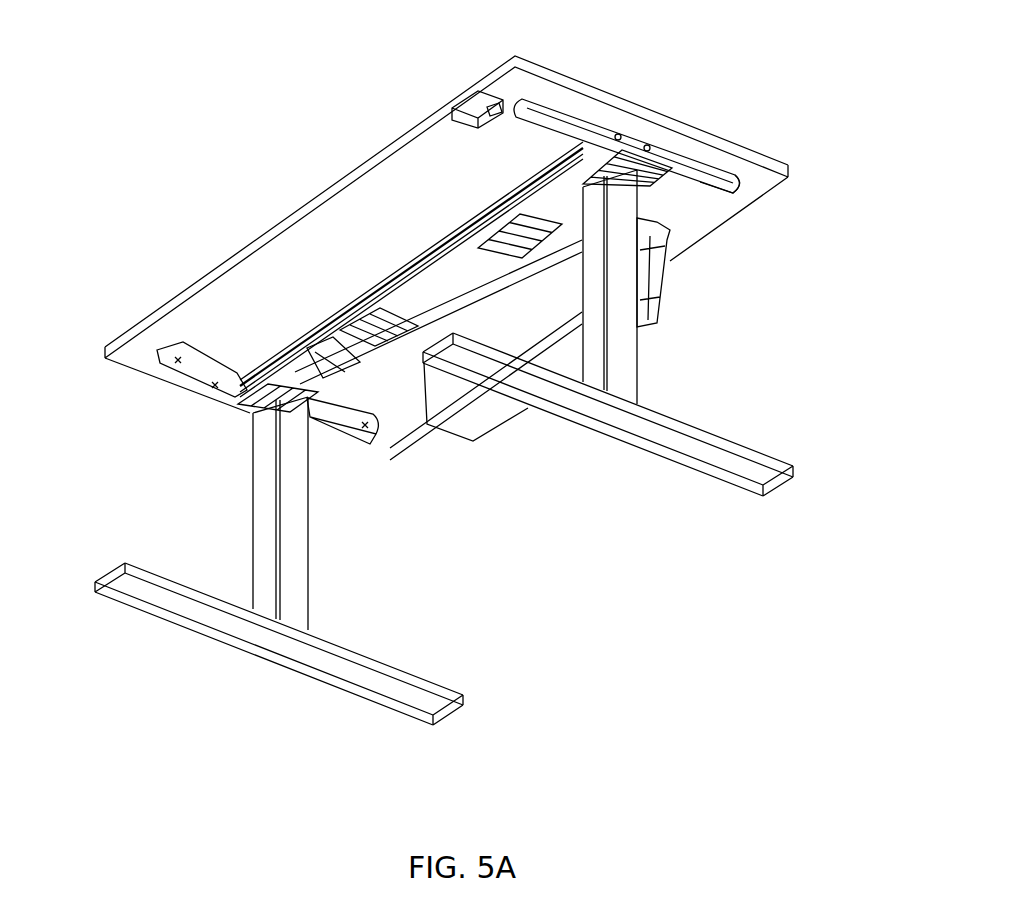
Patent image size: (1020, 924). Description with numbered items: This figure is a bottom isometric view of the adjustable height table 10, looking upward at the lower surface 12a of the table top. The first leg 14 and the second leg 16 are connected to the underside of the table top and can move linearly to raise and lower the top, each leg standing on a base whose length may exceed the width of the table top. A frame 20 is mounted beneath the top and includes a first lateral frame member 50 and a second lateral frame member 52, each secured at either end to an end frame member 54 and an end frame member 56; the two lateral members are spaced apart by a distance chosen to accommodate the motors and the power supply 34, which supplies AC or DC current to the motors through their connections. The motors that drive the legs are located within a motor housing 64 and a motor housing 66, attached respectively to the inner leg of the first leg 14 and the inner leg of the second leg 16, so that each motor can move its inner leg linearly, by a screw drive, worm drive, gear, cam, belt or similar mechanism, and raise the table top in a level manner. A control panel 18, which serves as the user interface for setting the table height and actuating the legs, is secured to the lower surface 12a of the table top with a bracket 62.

The table 10 is at (782, 128).
The lower surface 12a is at (323, 247).
The first leg 14 is at (645, 370).
The second leg 16 is at (243, 537).
The control panel 18 is at (457, 112).
The frame 20 is at (595, 115).
The power supply 34 is at (408, 262).
The first lateral frame member 50 is at (453, 288).
The second lateral frame member 52 is at (372, 377).
The end frame member 54 is at (690, 171).
The end frame member 56 is at (182, 373).
The bracket 62 is at (490, 112).
The motor housing 64 is at (573, 198).
The motor housing 66 is at (312, 383).